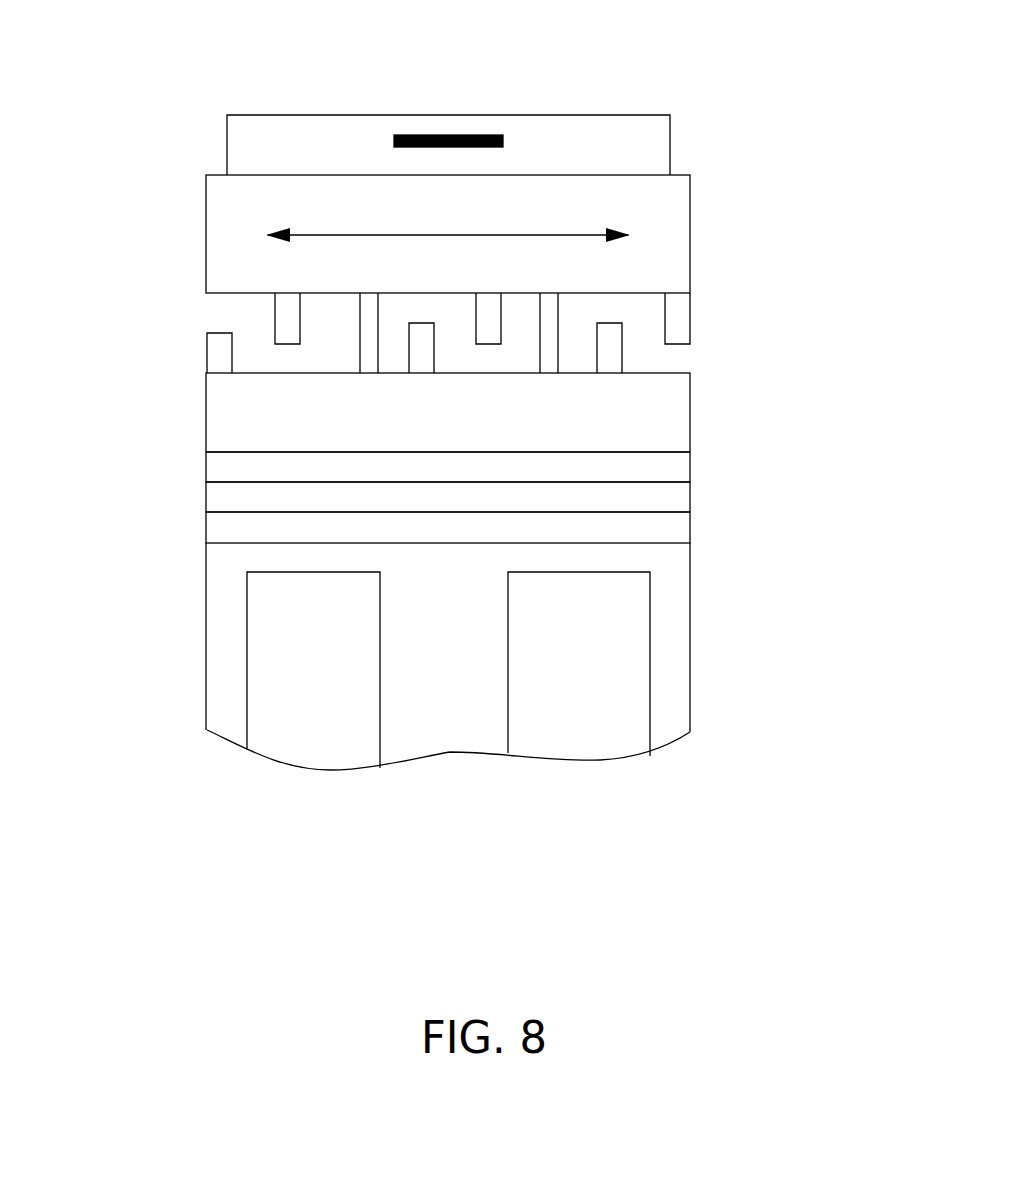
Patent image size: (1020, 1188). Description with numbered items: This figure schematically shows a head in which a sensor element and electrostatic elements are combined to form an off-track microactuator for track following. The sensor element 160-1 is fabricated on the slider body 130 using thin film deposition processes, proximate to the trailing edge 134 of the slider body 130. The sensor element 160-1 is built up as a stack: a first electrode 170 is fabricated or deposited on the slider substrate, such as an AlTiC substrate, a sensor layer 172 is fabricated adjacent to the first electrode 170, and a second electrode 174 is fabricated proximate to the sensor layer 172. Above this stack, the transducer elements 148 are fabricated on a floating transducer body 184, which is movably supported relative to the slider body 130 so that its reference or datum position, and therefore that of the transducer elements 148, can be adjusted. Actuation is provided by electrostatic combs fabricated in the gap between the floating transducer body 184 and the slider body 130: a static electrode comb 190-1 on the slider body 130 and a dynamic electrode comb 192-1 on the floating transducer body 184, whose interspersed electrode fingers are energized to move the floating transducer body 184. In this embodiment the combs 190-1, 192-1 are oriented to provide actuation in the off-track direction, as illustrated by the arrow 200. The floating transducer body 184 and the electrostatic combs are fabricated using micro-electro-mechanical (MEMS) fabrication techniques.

The transducer element 148 is at (503, 135).
The arrow 200 is at (570, 235).
The floating transducer body 184 is at (690, 235).
The dynamic electrode comb 192-1 is at (275, 318).
The static electrode comb 190-1 is at (207, 355).
The trailing edge 134 is at (188, 412).
The second electrode 174 is at (188, 465).
The sensor layer 172 is at (188, 498).
The first electrode 170 is at (188, 527).
The sensor element 160-1 is at (476, 526).
The slider body 130 is at (692, 680).